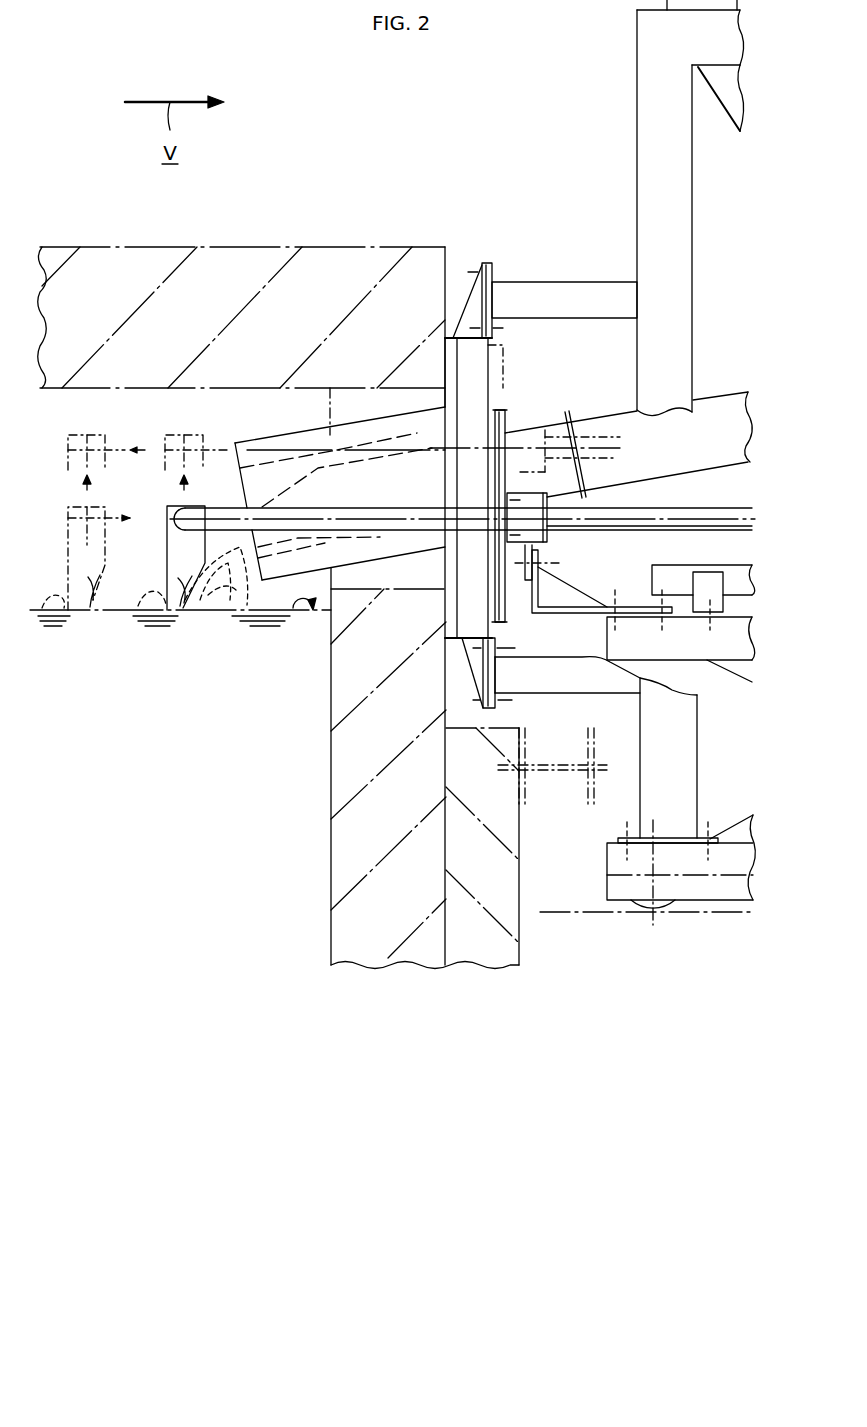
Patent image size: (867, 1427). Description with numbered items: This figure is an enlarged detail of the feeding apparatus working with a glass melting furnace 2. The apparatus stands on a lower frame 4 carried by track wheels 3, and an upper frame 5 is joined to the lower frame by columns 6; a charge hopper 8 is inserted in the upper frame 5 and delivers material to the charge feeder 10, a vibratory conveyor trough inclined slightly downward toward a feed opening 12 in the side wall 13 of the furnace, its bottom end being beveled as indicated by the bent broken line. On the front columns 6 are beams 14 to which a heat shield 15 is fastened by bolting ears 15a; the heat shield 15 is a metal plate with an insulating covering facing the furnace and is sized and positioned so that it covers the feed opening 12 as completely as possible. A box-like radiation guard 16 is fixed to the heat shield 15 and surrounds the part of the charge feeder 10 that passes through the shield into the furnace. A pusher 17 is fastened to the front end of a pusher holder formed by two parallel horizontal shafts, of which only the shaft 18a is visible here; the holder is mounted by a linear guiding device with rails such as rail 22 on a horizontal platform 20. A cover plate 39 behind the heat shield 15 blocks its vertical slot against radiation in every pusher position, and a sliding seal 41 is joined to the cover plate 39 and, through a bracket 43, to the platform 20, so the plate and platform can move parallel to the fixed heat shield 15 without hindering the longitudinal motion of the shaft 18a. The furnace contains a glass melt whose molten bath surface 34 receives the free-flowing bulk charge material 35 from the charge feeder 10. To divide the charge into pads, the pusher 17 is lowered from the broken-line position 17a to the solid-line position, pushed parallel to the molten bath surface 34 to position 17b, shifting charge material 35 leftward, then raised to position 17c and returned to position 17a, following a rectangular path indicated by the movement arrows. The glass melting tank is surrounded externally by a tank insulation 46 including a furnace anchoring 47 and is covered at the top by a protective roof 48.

The glass melting furnace 2 is at (83, 158).
The track wheels 3 is at (650, 905).
The lower frame 4 is at (728, 873).
The upper frame 5 is at (720, 36).
The columns 6 is at (672, 173).
The charge hopper 8 is at (730, 90).
The charge feeder 10 is at (730, 430).
The feed opening 12 is at (380, 400).
The side wall 13 is at (343, 857).
The beams 14 is at (561, 292).
The heat shield 15 is at (477, 375).
The bolting ears 15a is at (472, 300).
The radiation guard 16 is at (300, 425).
The pusher 17 is at (183, 612).
The pusher raised starting position 17a is at (181, 428).
The pusher horizontal end position 17b is at (96, 590).
The pusher raised end position 17c is at (84, 428).
The shaft 18a is at (728, 510).
The platform 20 is at (736, 640).
The rail 22 is at (738, 580).
The molten bath surface 34 is at (253, 591).
The charge material 35 is at (58, 615).
The cover plate 39 is at (503, 420).
The sliding seal 41 is at (527, 527).
The bracket 43 is at (557, 630).
The tank insulation 46 is at (488, 945).
The furnace anchoring 47 is at (562, 775).
The protective roof 48 is at (212, 270).